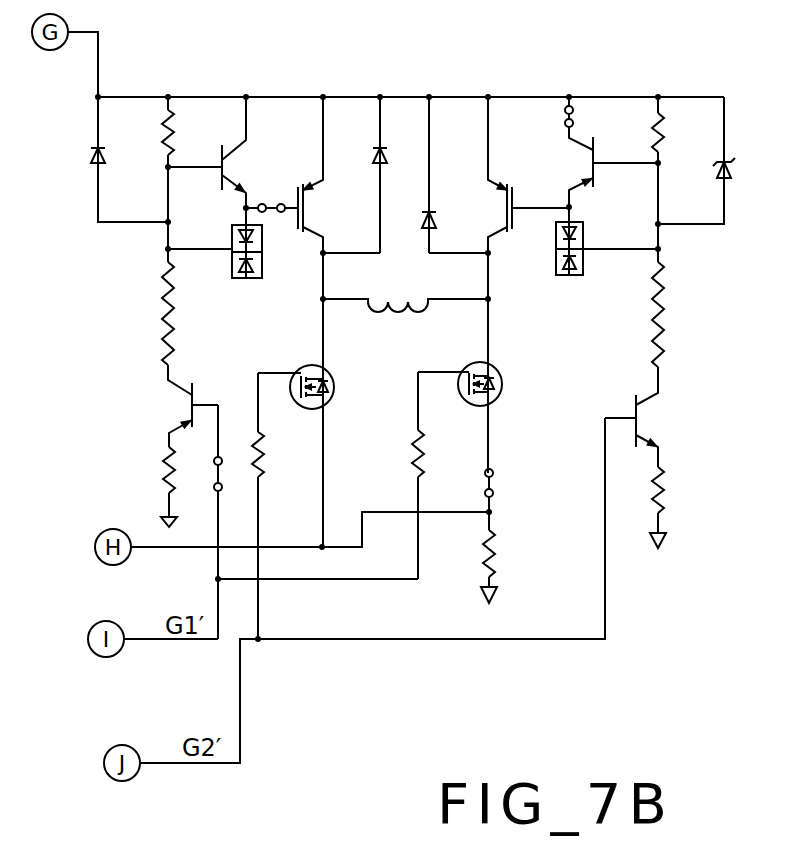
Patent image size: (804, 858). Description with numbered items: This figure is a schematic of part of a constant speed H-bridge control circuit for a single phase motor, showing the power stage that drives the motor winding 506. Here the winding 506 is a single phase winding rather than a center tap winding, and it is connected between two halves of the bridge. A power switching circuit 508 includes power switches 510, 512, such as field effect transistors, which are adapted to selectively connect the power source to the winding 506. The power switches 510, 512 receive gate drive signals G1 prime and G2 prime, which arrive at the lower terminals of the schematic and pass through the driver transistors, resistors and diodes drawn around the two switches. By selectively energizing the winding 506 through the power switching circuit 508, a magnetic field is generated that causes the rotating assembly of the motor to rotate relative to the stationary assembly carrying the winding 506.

The winding 506 is at (418, 322).
The power switching circuit 508 is at (517, 453).
The power switch 510 is at (502, 386).
The power switch 512 is at (334, 384).